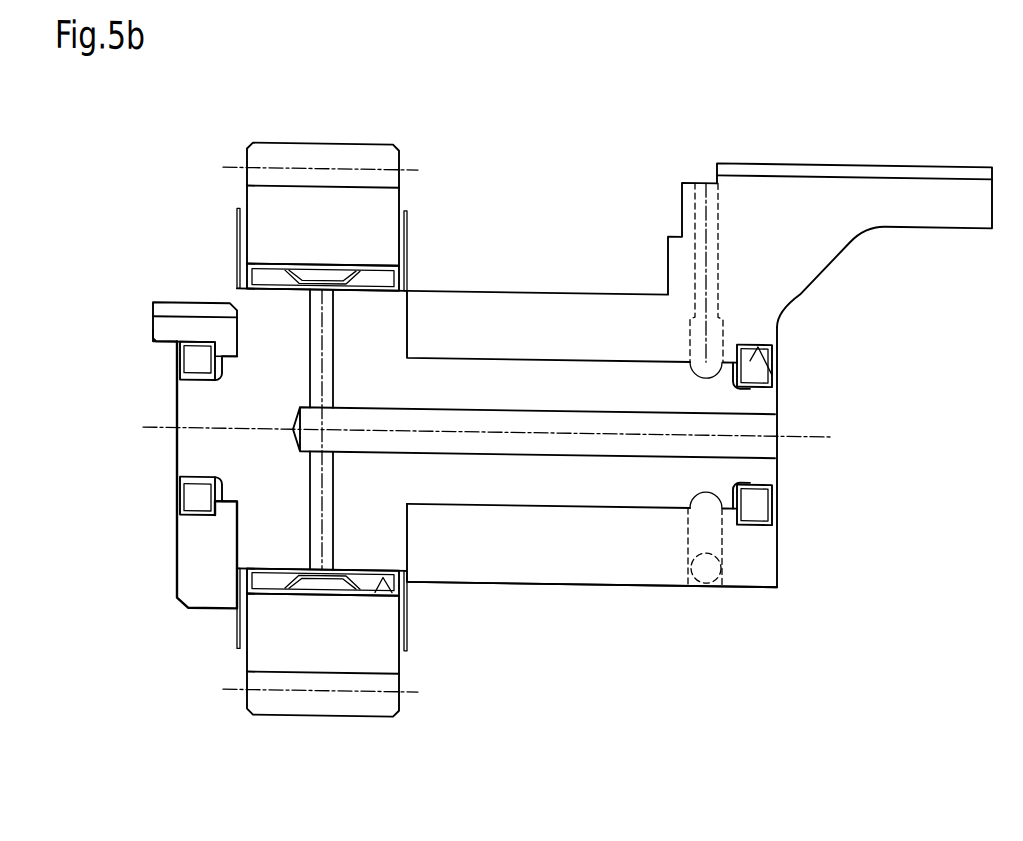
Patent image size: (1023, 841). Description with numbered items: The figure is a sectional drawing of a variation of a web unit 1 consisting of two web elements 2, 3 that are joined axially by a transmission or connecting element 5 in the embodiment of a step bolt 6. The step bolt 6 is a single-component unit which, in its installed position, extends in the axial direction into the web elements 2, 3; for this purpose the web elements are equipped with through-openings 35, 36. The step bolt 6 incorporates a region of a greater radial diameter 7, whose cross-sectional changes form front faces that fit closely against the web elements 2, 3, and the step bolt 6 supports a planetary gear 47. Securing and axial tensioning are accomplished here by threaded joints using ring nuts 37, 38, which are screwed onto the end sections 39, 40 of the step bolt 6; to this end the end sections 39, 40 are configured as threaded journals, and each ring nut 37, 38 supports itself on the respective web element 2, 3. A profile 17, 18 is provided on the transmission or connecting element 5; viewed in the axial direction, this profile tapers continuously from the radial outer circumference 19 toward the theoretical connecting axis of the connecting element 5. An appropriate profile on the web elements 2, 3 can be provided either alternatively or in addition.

The web unit 1 is at (510, 414).
The web element 2 is at (805, 185).
The web element 3 is at (185, 321).
The transmission element 5 is at (592, 604).
The step bolt 6 is at (583, 482).
The region of a greater radial diameter 7 is at (393, 331).
The profile 17 is at (418, 274).
The profile 18 is at (222, 281).
The radial outer circumference 19 is at (404, 596).
The through-opening 35 is at (776, 356).
The through-opening 36 is at (153, 342).
The ring nut 37 is at (760, 369).
The ring nut 38 is at (190, 362).
The end section 39 is at (758, 462).
The end section 40 is at (193, 454).
The planetary gear 47 is at (262, 641).